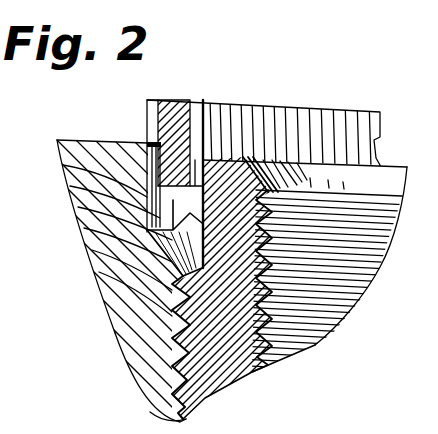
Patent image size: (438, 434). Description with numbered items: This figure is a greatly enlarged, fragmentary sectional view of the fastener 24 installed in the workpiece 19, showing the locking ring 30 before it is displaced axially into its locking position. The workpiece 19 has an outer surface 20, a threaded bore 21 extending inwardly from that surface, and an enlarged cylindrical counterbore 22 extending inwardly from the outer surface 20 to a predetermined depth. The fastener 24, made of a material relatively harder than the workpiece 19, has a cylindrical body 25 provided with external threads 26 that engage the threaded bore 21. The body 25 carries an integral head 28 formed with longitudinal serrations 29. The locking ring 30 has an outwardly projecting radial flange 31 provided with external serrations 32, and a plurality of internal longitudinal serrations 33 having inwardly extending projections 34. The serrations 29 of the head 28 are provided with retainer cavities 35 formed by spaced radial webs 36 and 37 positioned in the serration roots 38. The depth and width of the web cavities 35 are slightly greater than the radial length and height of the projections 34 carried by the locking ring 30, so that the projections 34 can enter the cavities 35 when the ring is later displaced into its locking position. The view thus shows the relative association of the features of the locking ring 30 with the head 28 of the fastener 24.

The workpiece 19 is at (146, 367).
The outer surface 20 is at (78, 140).
The threaded bore 21 is at (176, 322).
The cylindrical counterbore 22 is at (105, 177).
The fastener 24 is at (319, 353).
The cylindrical body 25 is at (214, 380).
The external threads 26 is at (160, 417).
The head 28 is at (253, 158).
The longitudinal serrations 29 is at (172, 266).
The locking ring 30 is at (190, 99).
The radial flange 31 is at (150, 152).
The external serrations 32 is at (150, 117).
The internal longitudinal serrations 33 is at (245, 127).
The inwardly extending projections 34 is at (150, 229).
The retainer cavities 35 is at (147, 210).
The radial web 36 is at (98, 199).
The radial web 37 is at (165, 243).
The serration roots 38 is at (147, 100).